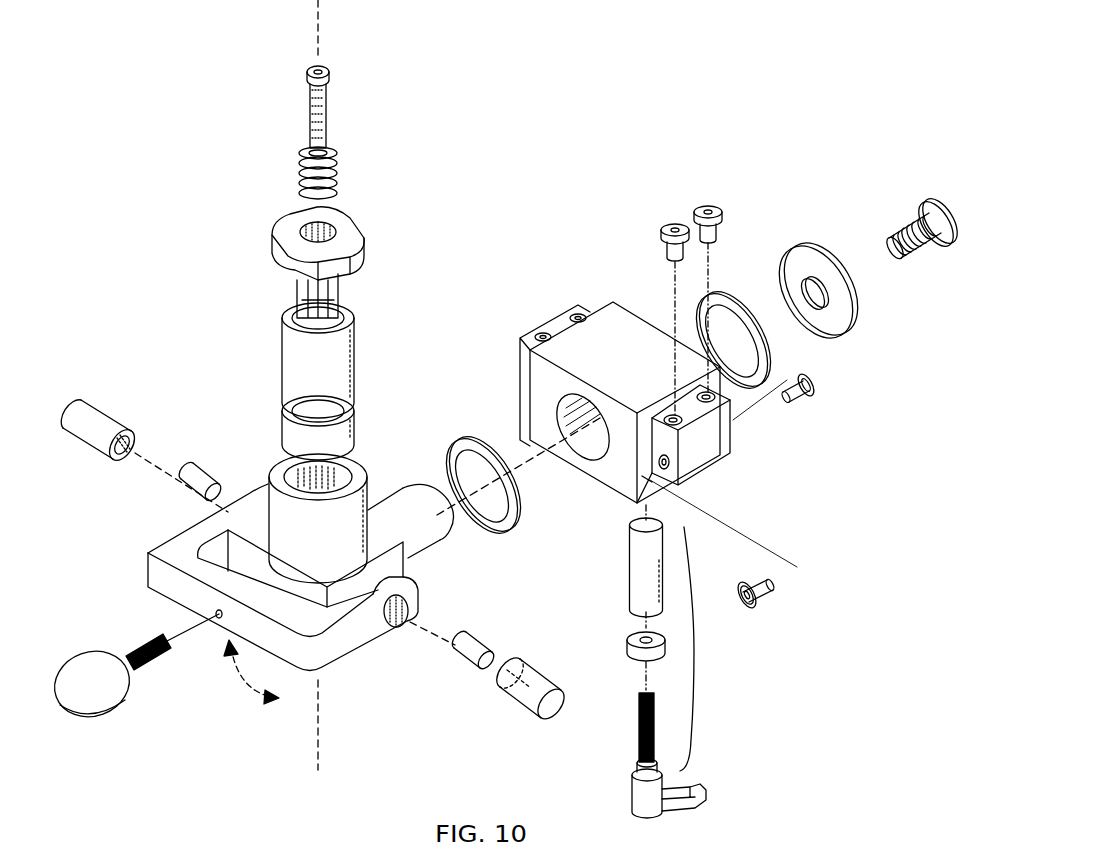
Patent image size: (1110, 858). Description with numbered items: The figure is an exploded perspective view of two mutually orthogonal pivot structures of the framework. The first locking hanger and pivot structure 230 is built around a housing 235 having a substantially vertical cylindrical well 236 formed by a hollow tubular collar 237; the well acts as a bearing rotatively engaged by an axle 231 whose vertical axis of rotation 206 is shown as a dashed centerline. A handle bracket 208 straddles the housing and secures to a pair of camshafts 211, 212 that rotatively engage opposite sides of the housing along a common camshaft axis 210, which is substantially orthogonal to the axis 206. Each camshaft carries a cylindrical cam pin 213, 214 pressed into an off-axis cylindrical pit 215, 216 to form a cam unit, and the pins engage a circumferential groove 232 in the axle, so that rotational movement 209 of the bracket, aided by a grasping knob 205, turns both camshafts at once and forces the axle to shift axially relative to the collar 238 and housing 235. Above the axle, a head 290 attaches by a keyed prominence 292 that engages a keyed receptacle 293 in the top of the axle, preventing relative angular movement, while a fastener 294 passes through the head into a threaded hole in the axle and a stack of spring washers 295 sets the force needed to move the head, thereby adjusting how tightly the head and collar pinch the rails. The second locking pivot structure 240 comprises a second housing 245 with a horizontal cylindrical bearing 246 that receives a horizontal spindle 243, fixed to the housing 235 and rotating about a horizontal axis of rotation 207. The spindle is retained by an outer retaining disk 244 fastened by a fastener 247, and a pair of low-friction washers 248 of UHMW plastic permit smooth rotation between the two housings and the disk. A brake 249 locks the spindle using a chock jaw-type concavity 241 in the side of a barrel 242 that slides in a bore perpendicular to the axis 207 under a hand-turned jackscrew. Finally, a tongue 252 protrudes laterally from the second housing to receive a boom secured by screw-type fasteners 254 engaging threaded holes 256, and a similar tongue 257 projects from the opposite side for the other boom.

The grasping knob 205 is at (93, 703).
The vertical axis of rotation 206 is at (327, 12).
The horizontal axis of rotation 207 is at (533, 463).
The handle bracket 208 is at (155, 573).
The rotational movement 209 is at (253, 687).
The camshaft axis 210 is at (137, 467).
The camshaft 211 is at (98, 418).
The camshaft 212 is at (553, 710).
The cam pin 213 is at (198, 475).
The cam pin 214 is at (482, 633).
The pit 215 is at (133, 437).
The pit 216 is at (502, 697).
The first locking hanger and pivot structure 230 is at (416, 212).
The axle 231 is at (287, 350).
The circumferential groove 232 is at (347, 407).
The housing 235 is at (372, 648).
The vertical cylindrical well 236 is at (290, 467).
The hollow tubular collar 237 is at (372, 500).
The collar 238 is at (362, 462).
The second locking pivot structure 240 is at (466, 324).
The chock jaw-type concavity 241 is at (633, 570).
The barrel 242 is at (630, 539).
The horizontal spindle 243 is at (445, 535).
The outer retaining disk 244 is at (822, 250).
The second housing 245 is at (613, 317).
The horizontal cylindrical bearing 246 is at (605, 413).
The fastener 247 is at (947, 210).
The low-friction washers 248 is at (472, 440).
The brake 249 is at (697, 655).
The tongue 252 is at (732, 445).
The screw-type fasteners 254 is at (673, 223).
The threaded holes 256 is at (677, 473).
The tongue 257 is at (552, 317).
The head 290 is at (276, 247).
The keyed prominence 292 is at (344, 298).
The keyed receptacle 293 is at (300, 307).
The fastener 294 is at (310, 107).
The spring washers 295 is at (300, 151).